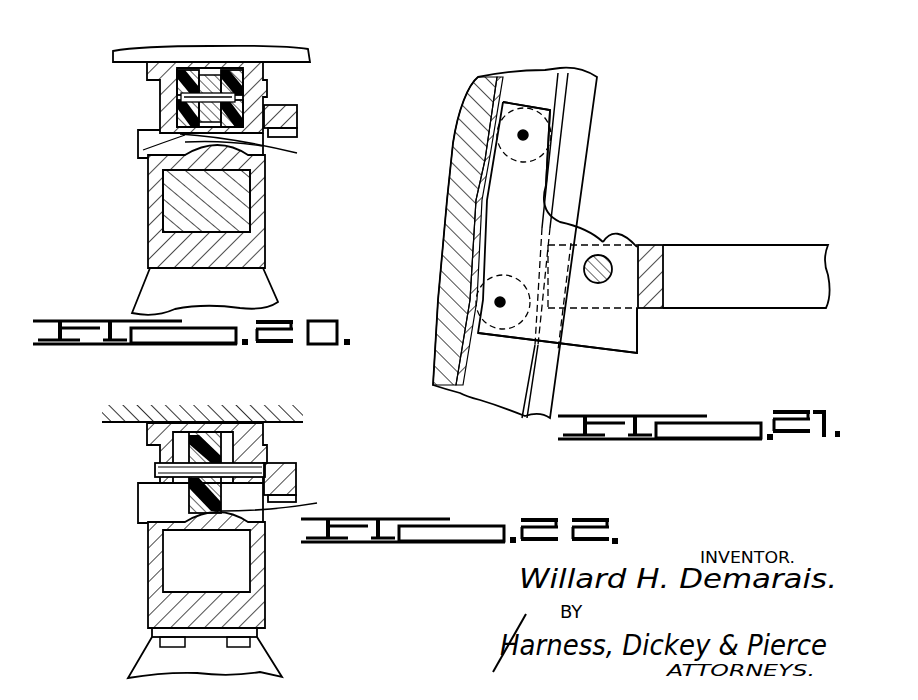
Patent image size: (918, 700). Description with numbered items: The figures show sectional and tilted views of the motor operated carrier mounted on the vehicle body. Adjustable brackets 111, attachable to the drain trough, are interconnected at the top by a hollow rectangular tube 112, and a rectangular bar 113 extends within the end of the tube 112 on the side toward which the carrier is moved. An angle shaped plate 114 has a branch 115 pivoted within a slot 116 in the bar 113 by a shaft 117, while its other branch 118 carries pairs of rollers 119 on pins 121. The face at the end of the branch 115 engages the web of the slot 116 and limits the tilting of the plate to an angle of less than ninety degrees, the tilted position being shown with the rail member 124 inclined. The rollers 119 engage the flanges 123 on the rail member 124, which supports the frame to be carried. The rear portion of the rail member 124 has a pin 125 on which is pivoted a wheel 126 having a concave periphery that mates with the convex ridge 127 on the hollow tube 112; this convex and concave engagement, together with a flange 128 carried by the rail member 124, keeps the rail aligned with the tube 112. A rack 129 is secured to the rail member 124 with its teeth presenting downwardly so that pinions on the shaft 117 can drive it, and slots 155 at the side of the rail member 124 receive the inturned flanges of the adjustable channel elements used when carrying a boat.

In FIG. 22, the adjustable brackets 111 is at (252, 665).
In FIG. 20, the hollow rectangular tube 112 is at (267, 212).
In FIG. 22, the hollow rectangular tube 112 is at (260, 572).
In FIG. 20, the rectangular bar 113 is at (206, 201).
In FIG. 21, the rectangular bar 113 is at (735, 245).
In FIG. 21, the angle shaped plate 114 is at (597, 228).
In FIG. 21, the branch 115 is at (628, 343).
In FIG. 21, the slot 116 is at (648, 237).
In FIG. 21, the shaft 117 is at (610, 246).
In FIG. 20, the branch 118 is at (207, 68).
In FIG. 21, the branch 118 is at (525, 197).
In FIG. 20, the rollers 119 is at (197, 68).
In FIG. 21, the rollers 119 is at (553, 133).
In FIG. 21, the pins 121 is at (518, 135).
In FIG. 20, the flanges 123 is at (245, 151).
In FIG. 20, the rail member 124 is at (273, 77).
In FIG. 21, the rail member 124 is at (455, 393).
In FIG. 22, the pin 125 is at (155, 470).
In FIG. 22, the wheel 126 is at (203, 440).
In FIG. 22, the convex ridge 127 is at (294, 504).
In FIG. 22, the flange 128 is at (137, 521).
In FIG. 20, the racks 129 is at (297, 117).
In FIG. 22, the racks 129 is at (298, 488).
In FIG. 20, the slots 155 is at (262, 89).